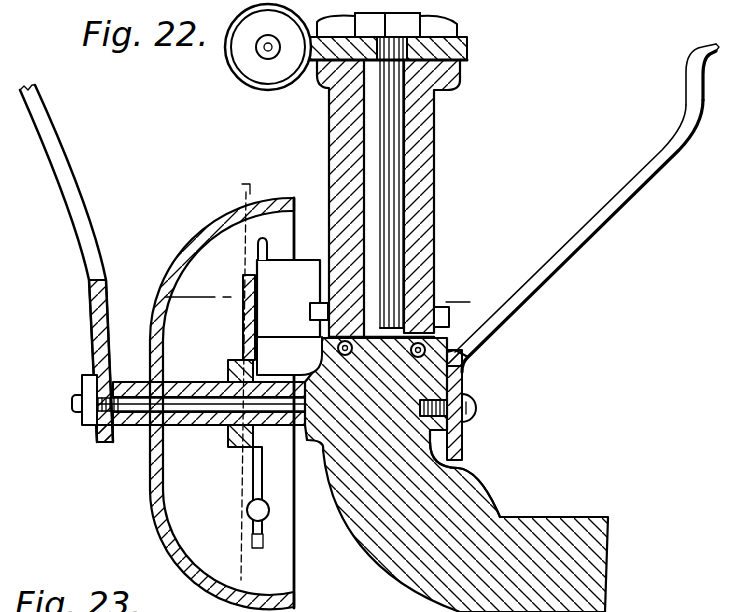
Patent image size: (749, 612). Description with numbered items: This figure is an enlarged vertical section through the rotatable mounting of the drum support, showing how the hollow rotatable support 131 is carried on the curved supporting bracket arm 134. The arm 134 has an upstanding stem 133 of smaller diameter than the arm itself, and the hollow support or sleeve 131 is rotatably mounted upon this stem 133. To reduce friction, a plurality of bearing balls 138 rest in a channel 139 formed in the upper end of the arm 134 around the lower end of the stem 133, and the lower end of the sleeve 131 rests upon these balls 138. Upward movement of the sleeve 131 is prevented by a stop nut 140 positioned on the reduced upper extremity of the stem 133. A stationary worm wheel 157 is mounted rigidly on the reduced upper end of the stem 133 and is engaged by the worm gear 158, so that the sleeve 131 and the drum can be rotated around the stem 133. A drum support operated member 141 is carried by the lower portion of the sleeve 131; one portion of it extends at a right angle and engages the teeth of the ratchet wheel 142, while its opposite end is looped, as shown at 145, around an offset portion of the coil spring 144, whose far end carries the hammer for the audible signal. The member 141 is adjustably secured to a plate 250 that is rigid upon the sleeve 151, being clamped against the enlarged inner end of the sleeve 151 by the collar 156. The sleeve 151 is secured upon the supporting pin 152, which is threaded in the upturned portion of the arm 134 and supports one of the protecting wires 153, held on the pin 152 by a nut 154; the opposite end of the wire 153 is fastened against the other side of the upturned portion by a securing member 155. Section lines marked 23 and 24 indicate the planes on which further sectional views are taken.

The column 131 is at (438, 160).
The rod 133 is at (382, 219).
The body 134 is at (413, 563).
The flange 138 is at (466, 362).
The lug 139 is at (440, 463).
The nut 140 is at (415, 22).
The cylinder 141 is at (292, 306).
The block 142 is at (450, 312).
The rod 144 is at (252, 466).
The ring 145 is at (248, 514).
The arm foot 151 is at (140, 425).
The housing 152 is at (100, 380).
The curved arm 153 is at (86, 240).
The bolt 154 is at (82, 383).
The screw 155 is at (478, 414).
The nut 156 is at (235, 372).
The flange plate 157 is at (470, 62).
The wheel 158 is at (256, 72).
The plate 250 is at (246, 285).
The section line 23 is at (301, 291).
The section line 24 is at (222, 378).